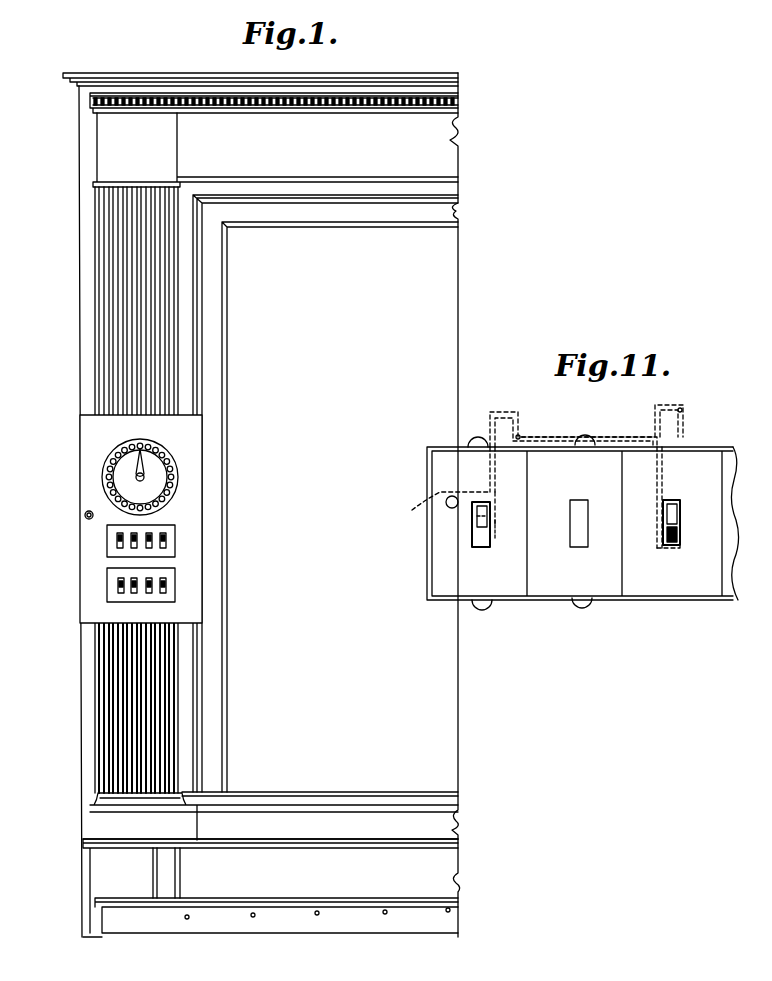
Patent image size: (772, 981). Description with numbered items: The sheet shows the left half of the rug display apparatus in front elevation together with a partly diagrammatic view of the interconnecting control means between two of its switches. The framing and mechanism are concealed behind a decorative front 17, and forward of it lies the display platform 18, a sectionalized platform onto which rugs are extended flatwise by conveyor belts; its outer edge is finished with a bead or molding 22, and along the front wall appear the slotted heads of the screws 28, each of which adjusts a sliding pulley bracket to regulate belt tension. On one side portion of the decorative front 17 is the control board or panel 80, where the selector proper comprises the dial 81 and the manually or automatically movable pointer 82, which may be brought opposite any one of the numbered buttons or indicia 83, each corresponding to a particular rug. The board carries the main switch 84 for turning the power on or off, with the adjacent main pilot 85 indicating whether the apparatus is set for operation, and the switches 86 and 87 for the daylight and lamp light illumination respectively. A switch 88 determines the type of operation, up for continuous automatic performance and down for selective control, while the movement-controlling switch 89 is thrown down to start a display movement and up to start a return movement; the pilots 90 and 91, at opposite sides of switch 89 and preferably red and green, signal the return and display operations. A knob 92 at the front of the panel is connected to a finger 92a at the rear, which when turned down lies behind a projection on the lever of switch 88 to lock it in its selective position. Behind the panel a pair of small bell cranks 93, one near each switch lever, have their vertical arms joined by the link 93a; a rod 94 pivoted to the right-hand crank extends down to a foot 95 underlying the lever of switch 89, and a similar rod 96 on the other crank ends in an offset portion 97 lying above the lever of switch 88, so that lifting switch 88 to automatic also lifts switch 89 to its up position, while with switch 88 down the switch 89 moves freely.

In FIG. 1, the decorative front 17 is at (443, 124).
In FIG. 1, the display platform 18 is at (313, 922).
In FIG. 1, the bead or molding 22 is at (422, 900).
In FIG. 1, the screw 28 is at (184, 917).
In FIG. 1, the control board or panel 80 is at (95, 446).
In FIG. 1, the dial 81 is at (102, 478).
In FIG. 1, the pointer 82 is at (140, 489).
In FIG. 1, the buttons or indicia 83 is at (160, 453).
In FIG. 1, the main switch 84 is at (121, 588).
In FIG. 1, the main pilot 85 is at (134, 588).
In FIG. 1, the daylight illumination switch 86 is at (149, 590).
In FIG. 1, the lamp light switch 87 is at (163, 592).
In FIG. 1, the operation-selecting switch 88 is at (118, 541).
In FIG. 11, the operation-selecting switch 88 is at (472, 543).
In FIG. 1, the movement-controlling switch 89 is at (150, 543).
In FIG. 11, the movement-controlling switch 89 is at (676, 535).
In FIG. 1, the pilot light 90 is at (135, 545).
In FIG. 11, the pilot light 90 is at (575, 538).
In FIG. 1, the pilot light 91 is at (163, 537).
In FIG. 1, the knob 92 is at (118, 535).
In FIG. 11, the knob 92 is at (452, 508).
In FIG. 1, the finger 92a is at (110, 527).
In FIG. 11, the finger 92a is at (441, 507).
In FIG. 11, the bell cranks 93 is at (520, 428).
In FIG. 11, the link 93a is at (567, 438).
In FIG. 11, the rod 94 is at (665, 486).
In FIG. 11, the foot 95 is at (667, 550).
In FIG. 11, the rod 96 is at (491, 484).
In FIG. 11, the offset portion 97 is at (491, 533).